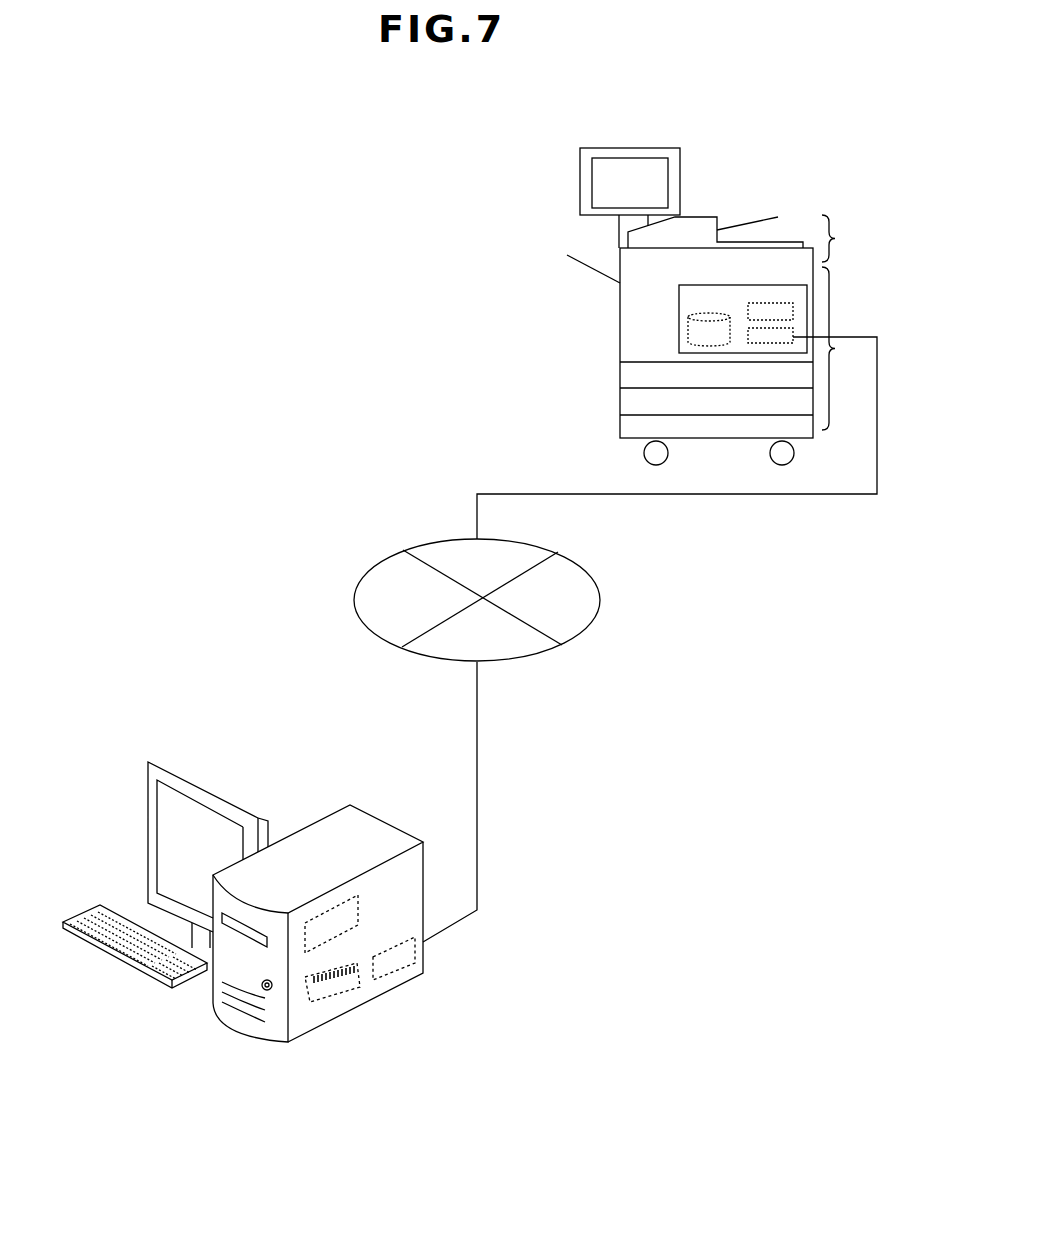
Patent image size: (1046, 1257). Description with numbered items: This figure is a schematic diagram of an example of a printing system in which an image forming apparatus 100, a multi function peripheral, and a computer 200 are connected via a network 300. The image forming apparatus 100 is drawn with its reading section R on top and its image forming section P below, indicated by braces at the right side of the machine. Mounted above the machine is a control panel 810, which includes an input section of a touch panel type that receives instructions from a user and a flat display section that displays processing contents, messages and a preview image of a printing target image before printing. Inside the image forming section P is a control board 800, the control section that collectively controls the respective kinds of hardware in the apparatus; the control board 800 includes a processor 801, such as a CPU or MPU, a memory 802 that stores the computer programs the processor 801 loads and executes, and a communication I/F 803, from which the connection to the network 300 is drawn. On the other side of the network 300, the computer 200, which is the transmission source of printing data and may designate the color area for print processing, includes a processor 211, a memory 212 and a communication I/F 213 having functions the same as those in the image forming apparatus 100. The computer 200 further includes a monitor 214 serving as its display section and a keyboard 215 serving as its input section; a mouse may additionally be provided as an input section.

The image forming apparatus 100 is at (538, 151).
The control panel 810 is at (632, 168).
The control board 800 is at (679, 323).
The processor 801 is at (777, 303).
The memory 802 is at (707, 312).
The communication I/F 803 is at (773, 343).
The network 300 is at (603, 603).
The computer 200 is at (134, 717).
The processor 211 is at (323, 923).
The memory 212 is at (337, 993).
The communication I/F 213 is at (400, 963).
The monitor 214 is at (183, 812).
The keyboard 215 is at (100, 903).
The reading section R is at (838, 238).
The image forming section P is at (837, 348).